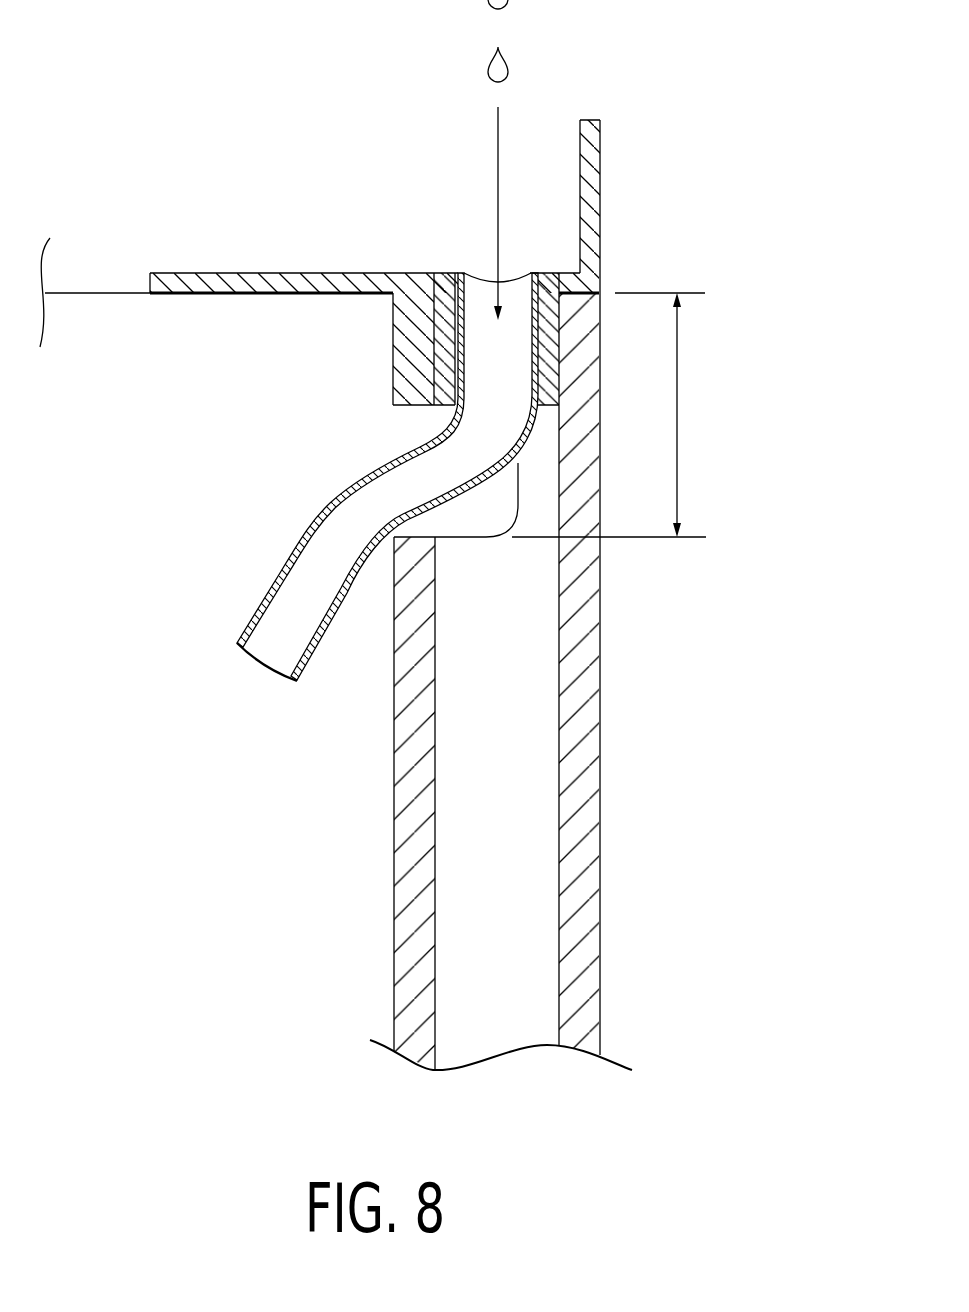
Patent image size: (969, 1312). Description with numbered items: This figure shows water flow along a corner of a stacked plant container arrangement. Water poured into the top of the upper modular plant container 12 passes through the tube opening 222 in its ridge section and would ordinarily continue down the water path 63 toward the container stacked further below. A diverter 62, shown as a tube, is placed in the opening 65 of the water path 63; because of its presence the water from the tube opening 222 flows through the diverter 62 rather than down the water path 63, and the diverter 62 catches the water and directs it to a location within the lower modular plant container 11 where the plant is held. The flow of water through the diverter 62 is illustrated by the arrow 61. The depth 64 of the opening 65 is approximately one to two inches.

The modular plant container 12 is at (698, 52).
The arrow 61 is at (498, 145).
The tube opening 222 is at (393, 348).
The diverter 62 is at (268, 582).
The depth 64 is at (679, 412).
The opening 65 is at (478, 506).
The modular plant container 11 is at (638, 763).
The water path 63 is at (580, 918).